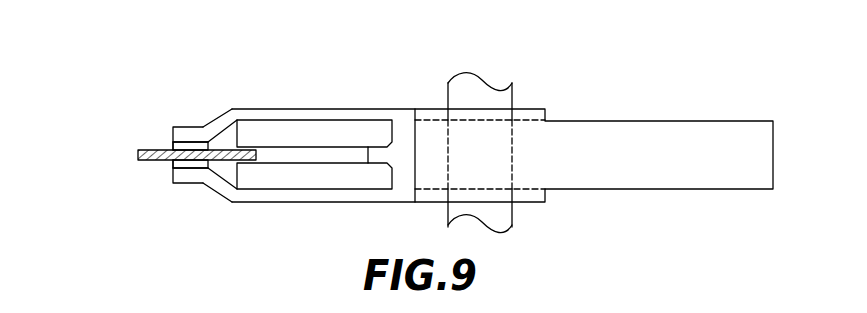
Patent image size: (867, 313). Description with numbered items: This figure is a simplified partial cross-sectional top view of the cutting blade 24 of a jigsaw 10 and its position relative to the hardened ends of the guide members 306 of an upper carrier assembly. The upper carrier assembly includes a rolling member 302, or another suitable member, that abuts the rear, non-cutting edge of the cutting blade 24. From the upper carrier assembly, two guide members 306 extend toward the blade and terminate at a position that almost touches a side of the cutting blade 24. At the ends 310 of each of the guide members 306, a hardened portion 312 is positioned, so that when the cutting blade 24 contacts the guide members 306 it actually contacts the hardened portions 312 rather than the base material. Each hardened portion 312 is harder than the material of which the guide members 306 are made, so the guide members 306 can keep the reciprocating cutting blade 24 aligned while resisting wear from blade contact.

The jigsaw 10 is at (556, 77).
The cutting blade 24 is at (138, 153).
The rolling member 302 is at (311, 133).
The guide members 306 is at (227, 119).
The ends of the guide members 310 is at (188, 130).
The hardened portions 312 is at (177, 142).